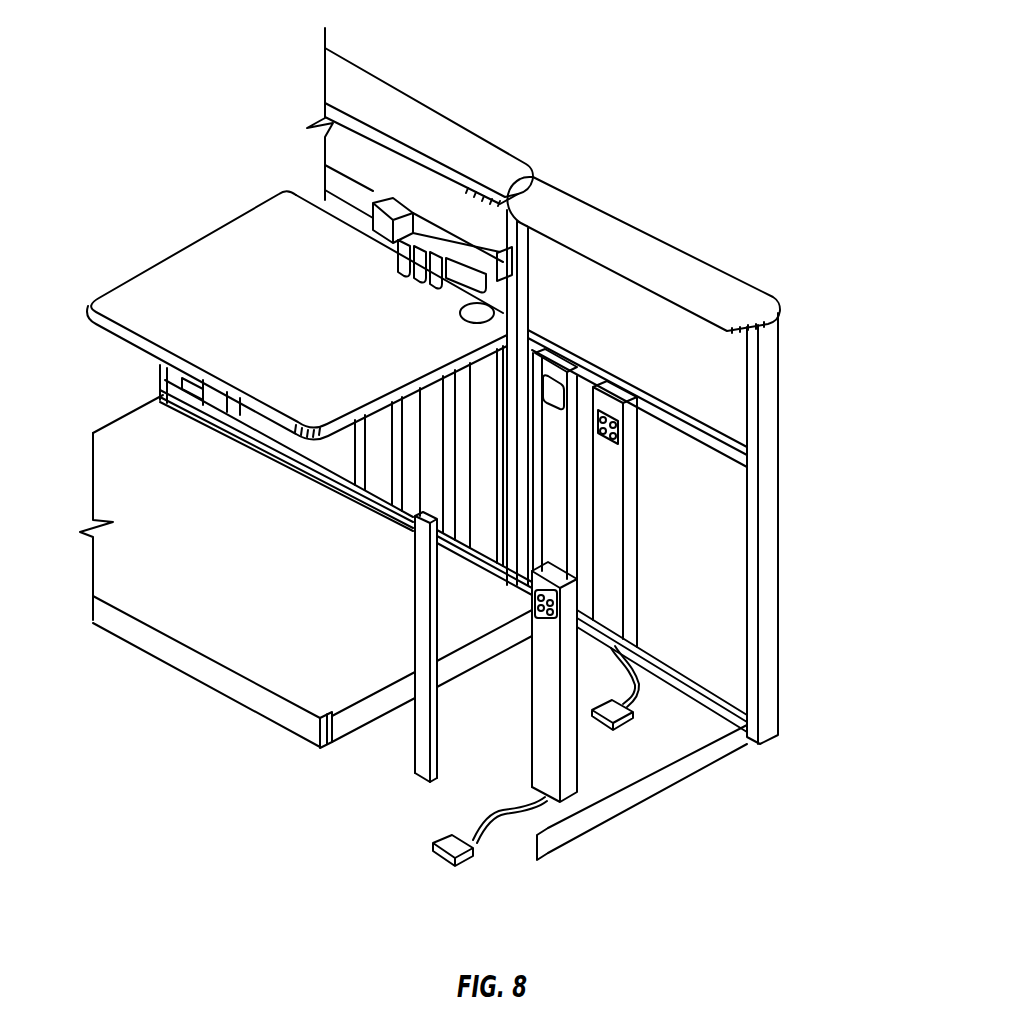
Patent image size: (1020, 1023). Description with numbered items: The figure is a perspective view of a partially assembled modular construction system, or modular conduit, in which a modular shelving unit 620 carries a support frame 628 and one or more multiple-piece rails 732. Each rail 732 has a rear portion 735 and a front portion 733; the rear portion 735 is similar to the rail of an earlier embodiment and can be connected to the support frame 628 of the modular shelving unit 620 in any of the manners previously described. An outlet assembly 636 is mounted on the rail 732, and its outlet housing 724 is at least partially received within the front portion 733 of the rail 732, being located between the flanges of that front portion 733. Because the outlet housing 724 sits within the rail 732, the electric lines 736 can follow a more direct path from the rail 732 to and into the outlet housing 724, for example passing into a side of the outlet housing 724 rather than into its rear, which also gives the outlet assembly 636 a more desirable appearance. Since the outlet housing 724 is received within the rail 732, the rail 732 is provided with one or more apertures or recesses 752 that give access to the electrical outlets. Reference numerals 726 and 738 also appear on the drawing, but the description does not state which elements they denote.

The modular shelving unit 620 is at (692, 518).
The support frame 628 is at (785, 470).
The pole top cap 738 is at (553, 565).
The outlet housing 724 is at (570, 565).
The outlet assembly 636 is at (591, 602).
The power pole 726 is at (390, 650).
The front portion 733 is at (531, 667).
The rail 732 is at (567, 629).
The rear portion 735 is at (415, 753).
The electric lines 736 is at (507, 807).
The apertures or recesses 752 is at (577, 753).